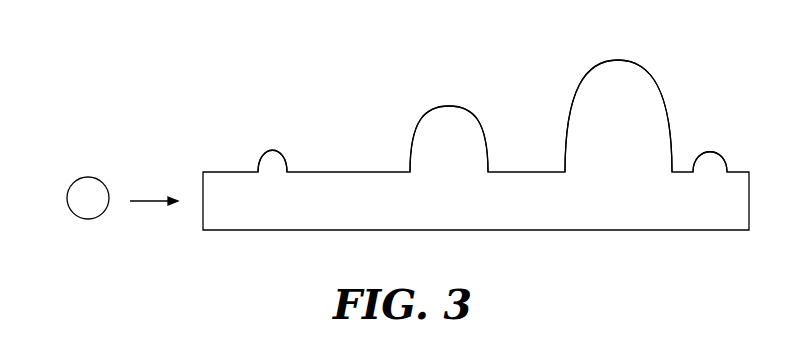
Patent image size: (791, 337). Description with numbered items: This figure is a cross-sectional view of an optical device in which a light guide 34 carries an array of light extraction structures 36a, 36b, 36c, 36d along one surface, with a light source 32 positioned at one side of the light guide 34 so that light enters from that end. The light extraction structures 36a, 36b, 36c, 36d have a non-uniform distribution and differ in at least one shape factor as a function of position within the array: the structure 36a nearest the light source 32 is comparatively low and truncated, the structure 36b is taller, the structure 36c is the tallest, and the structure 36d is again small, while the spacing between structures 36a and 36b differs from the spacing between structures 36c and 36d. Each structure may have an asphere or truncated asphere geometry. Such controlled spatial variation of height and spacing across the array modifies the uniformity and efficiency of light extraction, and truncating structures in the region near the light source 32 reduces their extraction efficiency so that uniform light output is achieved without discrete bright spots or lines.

The light source 32 is at (88, 176).
The light guide 34 is at (271, 216).
The light extraction structure 36a is at (272, 160).
The light extraction structure 36b is at (449, 112).
The light extraction structure 36c is at (622, 70).
The light extraction structure 36d is at (710, 158).